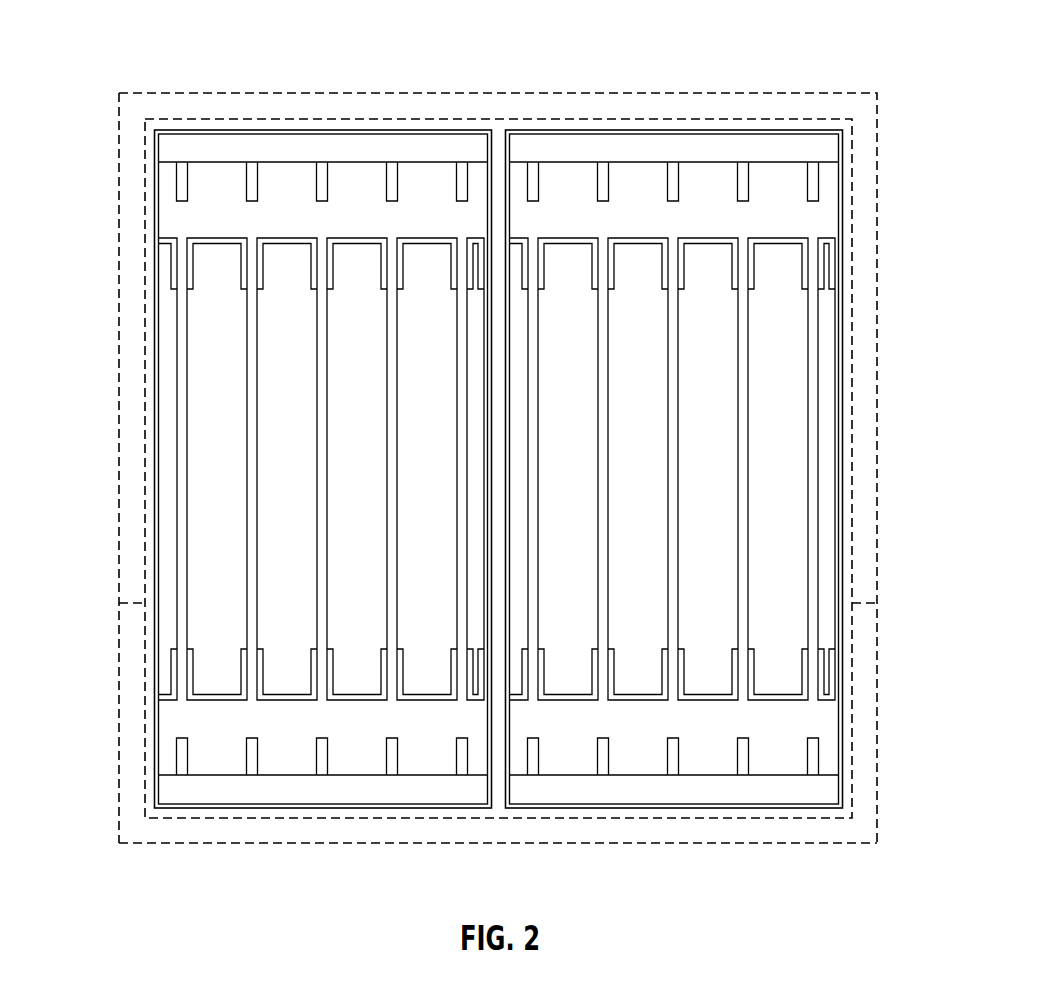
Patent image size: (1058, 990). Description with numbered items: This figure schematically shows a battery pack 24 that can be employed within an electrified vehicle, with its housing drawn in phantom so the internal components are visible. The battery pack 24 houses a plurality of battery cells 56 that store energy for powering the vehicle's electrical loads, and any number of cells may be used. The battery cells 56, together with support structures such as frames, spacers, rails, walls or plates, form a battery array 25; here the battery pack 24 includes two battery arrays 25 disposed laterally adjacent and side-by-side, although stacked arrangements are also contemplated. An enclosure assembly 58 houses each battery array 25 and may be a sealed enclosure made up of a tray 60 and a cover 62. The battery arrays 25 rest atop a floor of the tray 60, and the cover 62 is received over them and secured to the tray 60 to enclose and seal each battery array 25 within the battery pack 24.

The battery pack 24 is at (891, 105).
The battery array 25 is at (369, 185).
The battery cell 56 is at (207, 535).
The enclosure assembly 58 is at (121, 156).
The tray 60 is at (168, 835).
The cover 62 is at (182, 118).